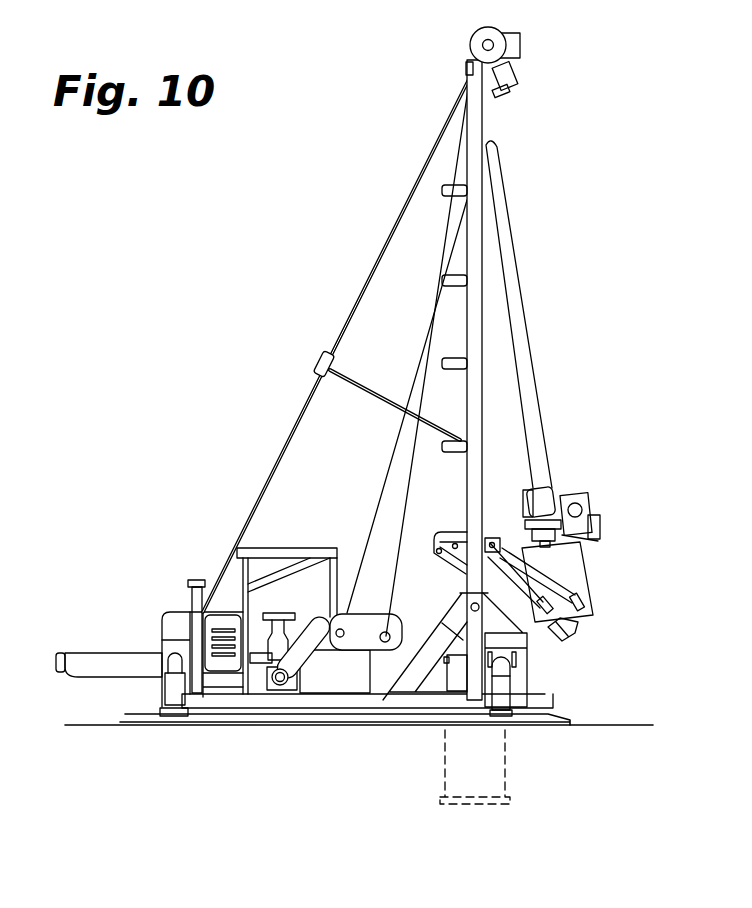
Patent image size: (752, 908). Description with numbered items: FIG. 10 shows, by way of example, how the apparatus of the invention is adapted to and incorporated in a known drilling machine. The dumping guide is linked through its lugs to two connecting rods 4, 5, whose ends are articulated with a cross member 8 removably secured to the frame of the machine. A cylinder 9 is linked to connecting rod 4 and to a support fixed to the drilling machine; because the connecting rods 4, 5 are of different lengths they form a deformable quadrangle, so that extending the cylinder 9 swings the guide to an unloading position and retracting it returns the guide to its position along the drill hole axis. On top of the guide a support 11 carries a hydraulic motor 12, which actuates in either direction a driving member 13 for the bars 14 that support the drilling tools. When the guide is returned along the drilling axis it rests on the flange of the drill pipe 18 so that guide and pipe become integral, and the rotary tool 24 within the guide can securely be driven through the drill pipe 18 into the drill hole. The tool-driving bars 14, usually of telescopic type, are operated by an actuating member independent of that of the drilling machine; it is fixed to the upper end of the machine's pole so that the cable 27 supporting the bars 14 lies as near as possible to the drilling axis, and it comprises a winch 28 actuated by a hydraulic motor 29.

The connecting rod 4 is at (518, 594).
The connecting rod 5 is at (568, 586).
The cross member 8 is at (489, 537).
The cylinder 9 is at (452, 566).
The support 11 is at (601, 532).
The hydraulic motor 12 is at (588, 502).
The driving member 13 is at (526, 525).
The bars 14 is at (538, 423).
The drill pipe 18 is at (448, 681).
The rotary tool 24 is at (578, 623).
The cable 27 is at (484, 115).
The winch 28 is at (492, 30).
The hydraulic motor 29 is at (517, 78).